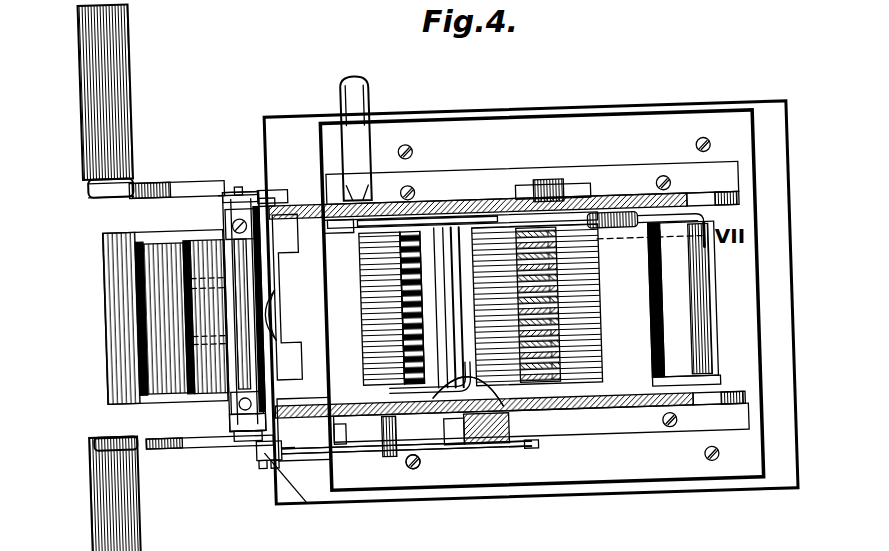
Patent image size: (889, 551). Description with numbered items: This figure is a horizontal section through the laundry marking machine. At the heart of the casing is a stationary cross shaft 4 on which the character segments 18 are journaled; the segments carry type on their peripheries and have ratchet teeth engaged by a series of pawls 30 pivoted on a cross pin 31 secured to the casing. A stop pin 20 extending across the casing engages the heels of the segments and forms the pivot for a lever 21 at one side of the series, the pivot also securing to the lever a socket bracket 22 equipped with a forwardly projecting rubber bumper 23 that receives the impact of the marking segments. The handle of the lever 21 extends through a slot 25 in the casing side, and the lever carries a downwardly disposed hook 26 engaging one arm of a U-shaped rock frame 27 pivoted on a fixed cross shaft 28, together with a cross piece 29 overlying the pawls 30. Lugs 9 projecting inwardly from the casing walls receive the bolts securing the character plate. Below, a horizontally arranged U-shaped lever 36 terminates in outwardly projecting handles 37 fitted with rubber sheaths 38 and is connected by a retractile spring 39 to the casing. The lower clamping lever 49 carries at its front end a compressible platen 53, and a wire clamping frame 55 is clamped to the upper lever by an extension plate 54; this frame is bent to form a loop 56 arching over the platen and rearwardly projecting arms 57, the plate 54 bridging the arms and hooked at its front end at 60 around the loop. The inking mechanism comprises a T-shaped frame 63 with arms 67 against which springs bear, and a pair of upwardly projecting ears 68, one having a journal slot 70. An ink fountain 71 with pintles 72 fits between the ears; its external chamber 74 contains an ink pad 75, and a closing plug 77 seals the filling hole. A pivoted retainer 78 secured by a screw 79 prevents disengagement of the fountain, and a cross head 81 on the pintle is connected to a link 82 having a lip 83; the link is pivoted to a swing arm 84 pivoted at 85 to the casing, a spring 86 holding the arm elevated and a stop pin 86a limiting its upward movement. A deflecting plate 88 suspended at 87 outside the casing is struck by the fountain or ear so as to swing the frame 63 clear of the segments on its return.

The stationary cross shaft 4 is at (559, 183).
The lugs 9 is at (282, 195).
The character segments 18 is at (590, 312).
The stop pin 20 is at (678, 382).
The lever 21 is at (712, 292).
The socket bracket 22 is at (676, 334).
The bumper 23 is at (652, 336).
The slot 25 is at (366, 92).
The hook 26 is at (336, 118).
The U-shaped rock frame 27 is at (454, 200).
The cross shaft 28 is at (486, 192).
The cross piece 29 is at (432, 200).
The pawls 30 is at (392, 200).
The cross pin 31 is at (520, 408).
The U-shaped lever 36 is at (160, 188).
The handles 37 is at (100, 190).
The rubber sheaths 38 is at (128, 8).
The retractile spring 39 is at (608, 220).
The lower clamping lever 49 is at (108, 386).
The platen 53 is at (146, 284).
The extension plate 54 is at (137, 243).
The wire clamping frame 55 is at (140, 268).
The loop 56 is at (137, 313).
The arms 57 is at (235, 395).
The hook 60 is at (178, 326).
The T-shaped frame 63 is at (284, 313).
The arms 67 is at (275, 195).
The ears 68 is at (228, 185).
The journal slot 70 is at (252, 442).
The ink fountain 71 is at (222, 213).
The pintles 72 is at (241, 188).
The external chamber 74 is at (228, 418).
The ink pad 75 is at (236, 426).
The closing plug 77 is at (222, 193).
The retainer 78 is at (254, 458).
The screw 79 is at (270, 464).
The cross head 81 is at (262, 462).
The link 82 is at (282, 452).
The lip 83 is at (268, 455).
The swing arm 84 is at (485, 446).
The pivot 85 is at (528, 450).
The spring 86 is at (452, 445).
The stop pin 86a is at (420, 468).
The pivot 87 is at (340, 432).
The deflecting plate 88 is at (372, 430).